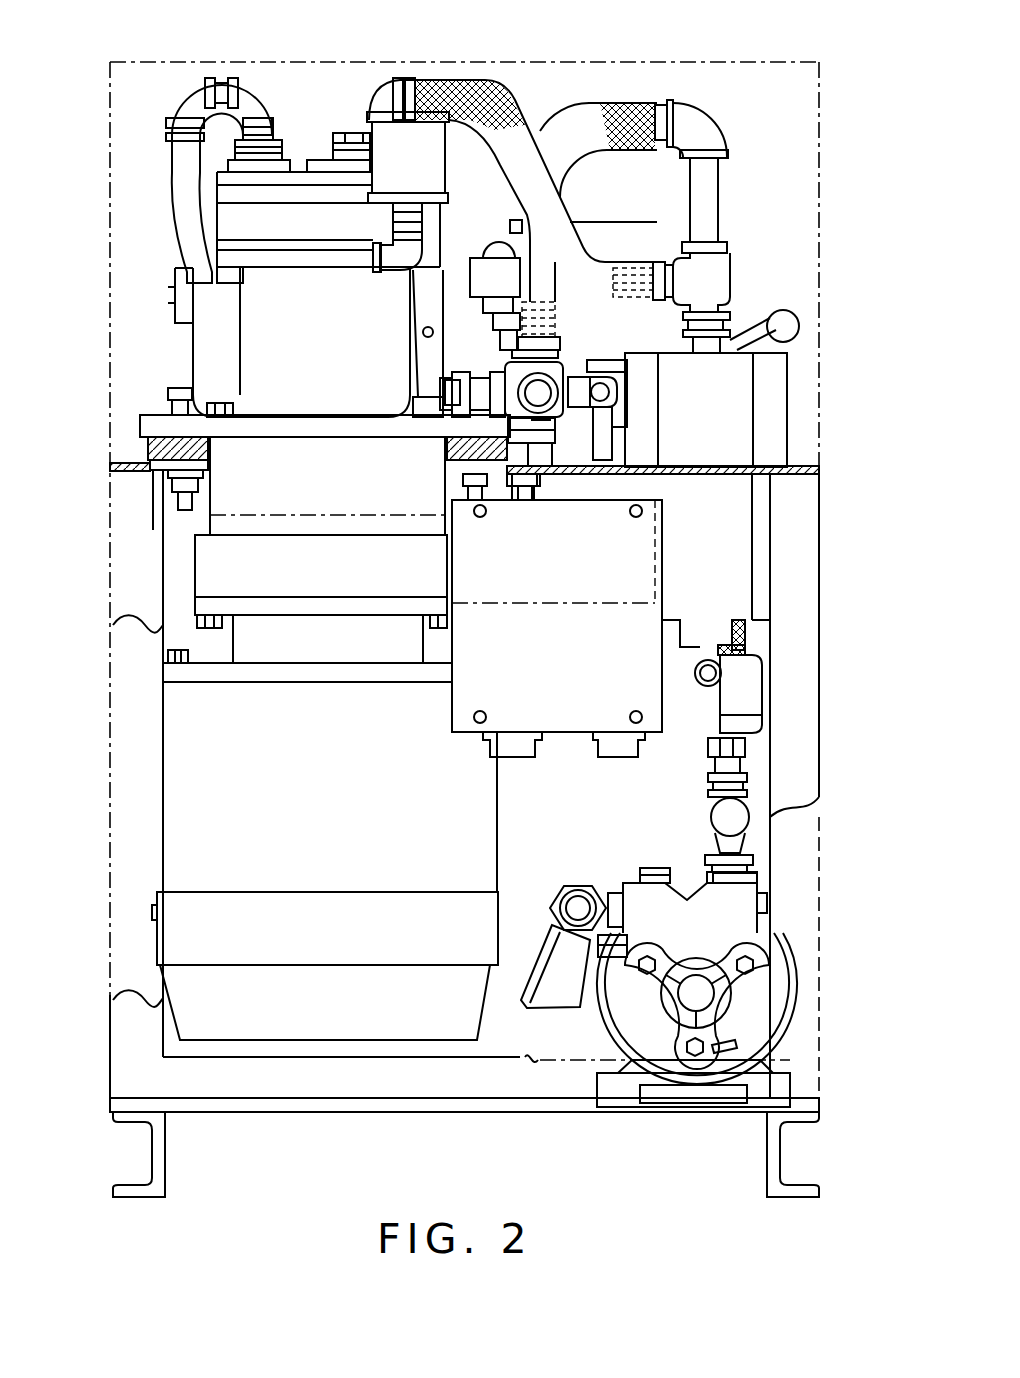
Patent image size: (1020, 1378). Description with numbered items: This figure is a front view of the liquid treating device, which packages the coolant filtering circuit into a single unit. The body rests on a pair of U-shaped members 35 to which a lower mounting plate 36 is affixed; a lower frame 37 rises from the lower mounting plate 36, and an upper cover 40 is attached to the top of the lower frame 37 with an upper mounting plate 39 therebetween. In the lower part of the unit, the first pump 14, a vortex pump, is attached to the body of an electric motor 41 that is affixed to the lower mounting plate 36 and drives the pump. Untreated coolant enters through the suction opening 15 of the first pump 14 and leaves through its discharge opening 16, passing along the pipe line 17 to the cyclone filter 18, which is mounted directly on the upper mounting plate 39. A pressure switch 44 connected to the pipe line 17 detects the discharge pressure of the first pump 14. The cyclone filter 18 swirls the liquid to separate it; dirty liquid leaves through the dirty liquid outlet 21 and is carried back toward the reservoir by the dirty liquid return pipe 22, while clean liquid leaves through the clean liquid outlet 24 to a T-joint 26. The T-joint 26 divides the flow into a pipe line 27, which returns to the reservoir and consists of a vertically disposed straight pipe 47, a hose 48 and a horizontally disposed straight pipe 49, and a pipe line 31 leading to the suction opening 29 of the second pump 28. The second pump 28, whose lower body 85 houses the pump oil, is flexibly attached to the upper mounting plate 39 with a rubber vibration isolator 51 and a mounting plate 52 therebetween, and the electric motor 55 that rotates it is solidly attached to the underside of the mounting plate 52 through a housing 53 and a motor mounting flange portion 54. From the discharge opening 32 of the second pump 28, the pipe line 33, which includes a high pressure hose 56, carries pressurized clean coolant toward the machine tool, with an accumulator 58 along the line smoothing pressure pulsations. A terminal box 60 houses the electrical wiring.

The first pump 14 is at (750, 908).
The suction opening 15 is at (613, 892).
The discharge opening 16 is at (755, 878).
The pipe line 17 is at (745, 798).
The cyclone filter 18 is at (775, 430).
The dirty liquid outlet 21 is at (730, 655).
The dirty liquid return pipe 22 is at (722, 680).
The clean liquid outlet 24 is at (717, 307).
The T-joint 26 is at (720, 270).
The pipe line 27 is at (628, 100).
The second pump 28 is at (232, 213).
The suction opening 29 is at (355, 150).
The pipe line 31 is at (500, 97).
The discharge opening 32 is at (275, 148).
The pipe line 33 is at (173, 182).
The U-shaped members 35 is at (153, 1150).
The lower mounting plate 36 is at (805, 1100).
The lower frame 37 is at (805, 1052).
The upper mounting plate 39 is at (805, 465).
The upper cover 40 is at (821, 140).
The electric motor 41 is at (800, 985).
The pressure switch 44 is at (735, 700).
The straight pipe 47 is at (712, 200).
The hose 48 is at (573, 130).
The straight pipe 49 is at (555, 375).
The rubber vibration isolator 51 is at (148, 450).
The mounting plate 52 is at (140, 420).
The housing 53 is at (222, 490).
The motor mounting flange portion 54 is at (205, 600).
The electric motor 55 is at (183, 745).
The high pressure hose 56 is at (185, 243).
The accumulator 58 is at (505, 273).
The terminal box 60 is at (563, 735).
The lower body 85 is at (258, 338).